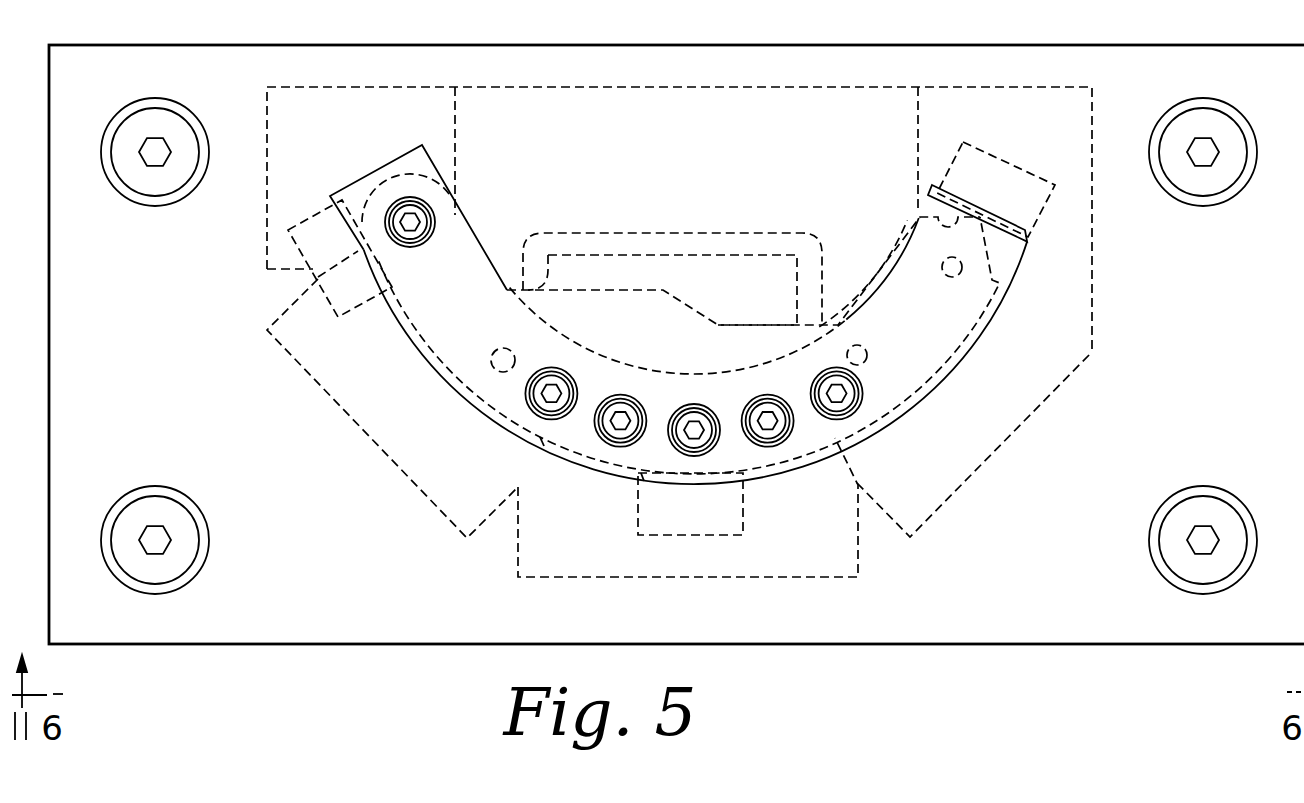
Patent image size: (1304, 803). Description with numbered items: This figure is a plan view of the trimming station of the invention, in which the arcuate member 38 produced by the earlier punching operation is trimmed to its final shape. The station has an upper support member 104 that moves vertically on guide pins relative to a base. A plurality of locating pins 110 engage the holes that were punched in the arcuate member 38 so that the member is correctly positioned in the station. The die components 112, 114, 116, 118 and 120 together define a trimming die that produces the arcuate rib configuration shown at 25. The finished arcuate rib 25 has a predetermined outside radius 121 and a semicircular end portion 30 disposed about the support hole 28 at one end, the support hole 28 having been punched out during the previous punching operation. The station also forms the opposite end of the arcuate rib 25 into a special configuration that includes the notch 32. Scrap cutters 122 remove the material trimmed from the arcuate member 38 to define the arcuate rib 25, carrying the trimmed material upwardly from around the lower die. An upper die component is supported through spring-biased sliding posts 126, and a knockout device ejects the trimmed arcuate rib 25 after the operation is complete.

The arcuate rib 25 is at (634, 366).
The support hole 28 is at (436, 190).
The semicircular end portion 30 is at (400, 176).
The notch 32 is at (922, 198).
The arcuate member 38 is at (953, 370).
The upper support member 104 is at (1010, 628).
The locating pins 110 is at (497, 349).
The die component 112 is at (265, 228).
The die component 114 is at (413, 477).
The die component 116 is at (718, 578).
The die component 118 is at (955, 497).
The die component 120 is at (835, 87).
The outside radius 121 is at (581, 457).
The scrap cutters 122 is at (336, 312).
The spring-biased sliding posts 126 is at (612, 410).